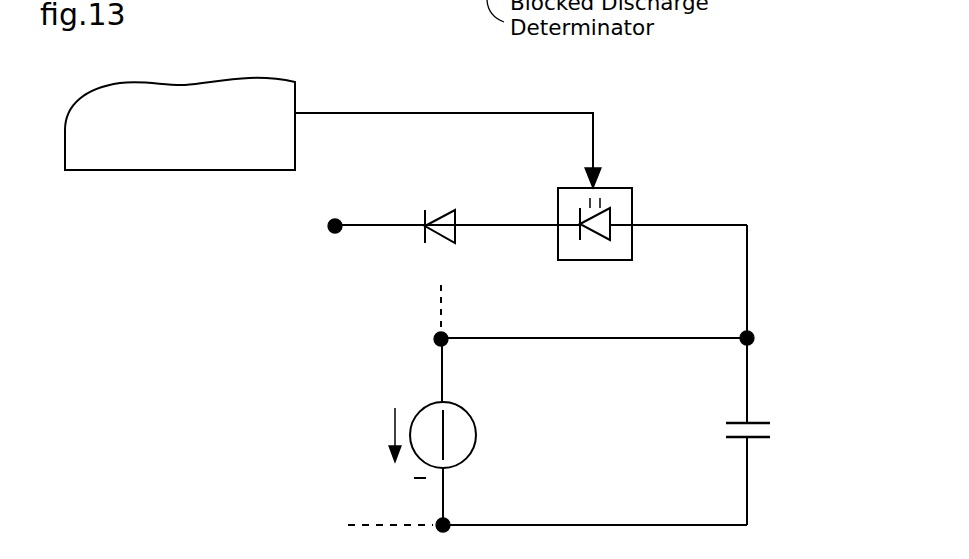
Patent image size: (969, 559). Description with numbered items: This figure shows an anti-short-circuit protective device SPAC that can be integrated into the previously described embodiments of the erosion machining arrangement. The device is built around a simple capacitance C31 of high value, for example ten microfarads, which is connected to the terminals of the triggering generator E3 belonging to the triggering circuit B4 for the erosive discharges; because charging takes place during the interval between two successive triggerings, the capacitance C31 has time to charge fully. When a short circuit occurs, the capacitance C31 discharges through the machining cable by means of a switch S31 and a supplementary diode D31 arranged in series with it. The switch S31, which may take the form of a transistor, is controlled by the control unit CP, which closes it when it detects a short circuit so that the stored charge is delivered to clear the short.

The control unit CP is at (333, 133).
The supplementary diode D31 is at (441, 212).
The switch S31 is at (623, 200).
The anti-short-circuit protective device SPAC is at (760, 268).
The triggering circuit B4 is at (440, 365).
The triggering generator E3 is at (451, 440).
The capacitance C31 is at (740, 421).